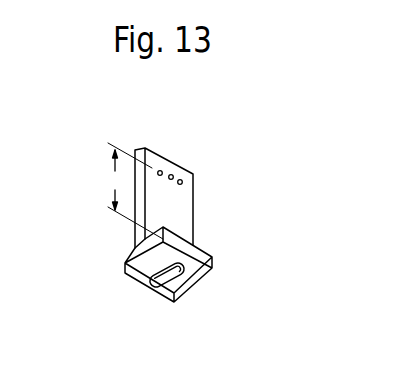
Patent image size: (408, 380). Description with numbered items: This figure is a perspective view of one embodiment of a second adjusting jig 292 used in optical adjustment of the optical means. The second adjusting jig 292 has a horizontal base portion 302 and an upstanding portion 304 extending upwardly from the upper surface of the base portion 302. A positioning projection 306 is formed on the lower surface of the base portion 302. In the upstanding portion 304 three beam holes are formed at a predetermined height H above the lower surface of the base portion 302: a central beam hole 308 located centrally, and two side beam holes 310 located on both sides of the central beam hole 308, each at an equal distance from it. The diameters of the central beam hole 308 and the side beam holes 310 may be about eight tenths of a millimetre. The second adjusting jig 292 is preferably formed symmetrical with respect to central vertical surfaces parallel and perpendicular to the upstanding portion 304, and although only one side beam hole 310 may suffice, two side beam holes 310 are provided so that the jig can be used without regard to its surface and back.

The second adjusting jig 292 is at (192, 215).
The base portion 302 is at (129, 282).
The upstanding portion 304 is at (195, 170).
The positioning projection 306 is at (163, 288).
The central beam hole 308 is at (173, 175).
The side beam holes 310 is at (160, 170).